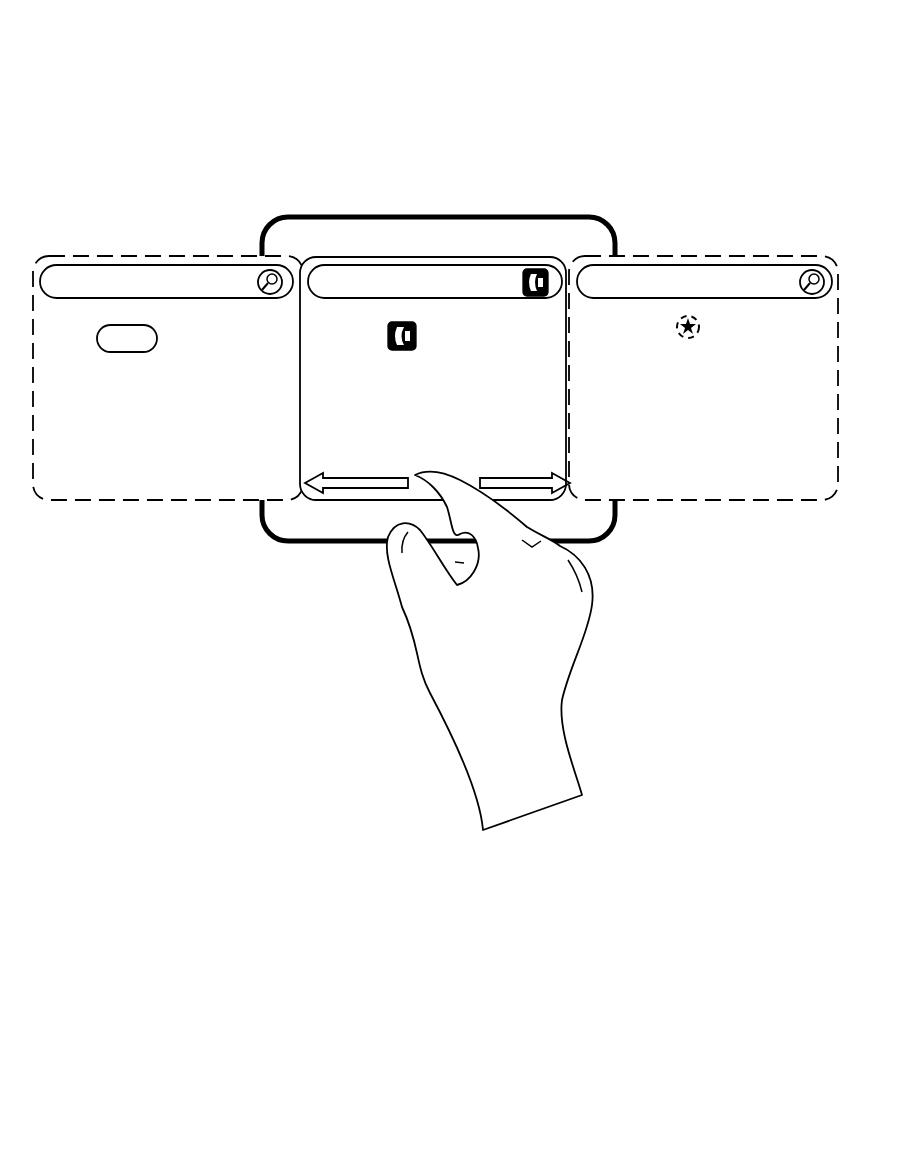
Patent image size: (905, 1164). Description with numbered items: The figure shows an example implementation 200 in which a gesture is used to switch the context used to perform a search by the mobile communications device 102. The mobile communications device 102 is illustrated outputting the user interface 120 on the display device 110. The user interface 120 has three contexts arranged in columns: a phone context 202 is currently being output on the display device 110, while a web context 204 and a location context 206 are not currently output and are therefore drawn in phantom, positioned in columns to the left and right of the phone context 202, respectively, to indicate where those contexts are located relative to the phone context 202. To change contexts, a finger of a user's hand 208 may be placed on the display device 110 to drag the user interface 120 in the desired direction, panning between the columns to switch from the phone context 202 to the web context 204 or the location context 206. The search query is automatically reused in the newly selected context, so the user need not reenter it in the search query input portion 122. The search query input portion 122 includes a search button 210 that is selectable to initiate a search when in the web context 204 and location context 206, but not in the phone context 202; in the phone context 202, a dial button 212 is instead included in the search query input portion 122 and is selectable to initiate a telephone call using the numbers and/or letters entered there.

The example implementation 200 is at (150, 80).
The mobile communications device 102 is at (437, 218).
The display device 110 is at (367, 505).
The user interface 120 is at (114, 541).
The search query input portion 122 is at (80, 263).
The phone context 202 is at (437, 255).
The web context 204 is at (168, 255).
The location context 206 is at (703, 255).
The user's hand 208 is at (418, 688).
The search button 210 is at (268, 270).
The dial button 212 is at (522, 270).